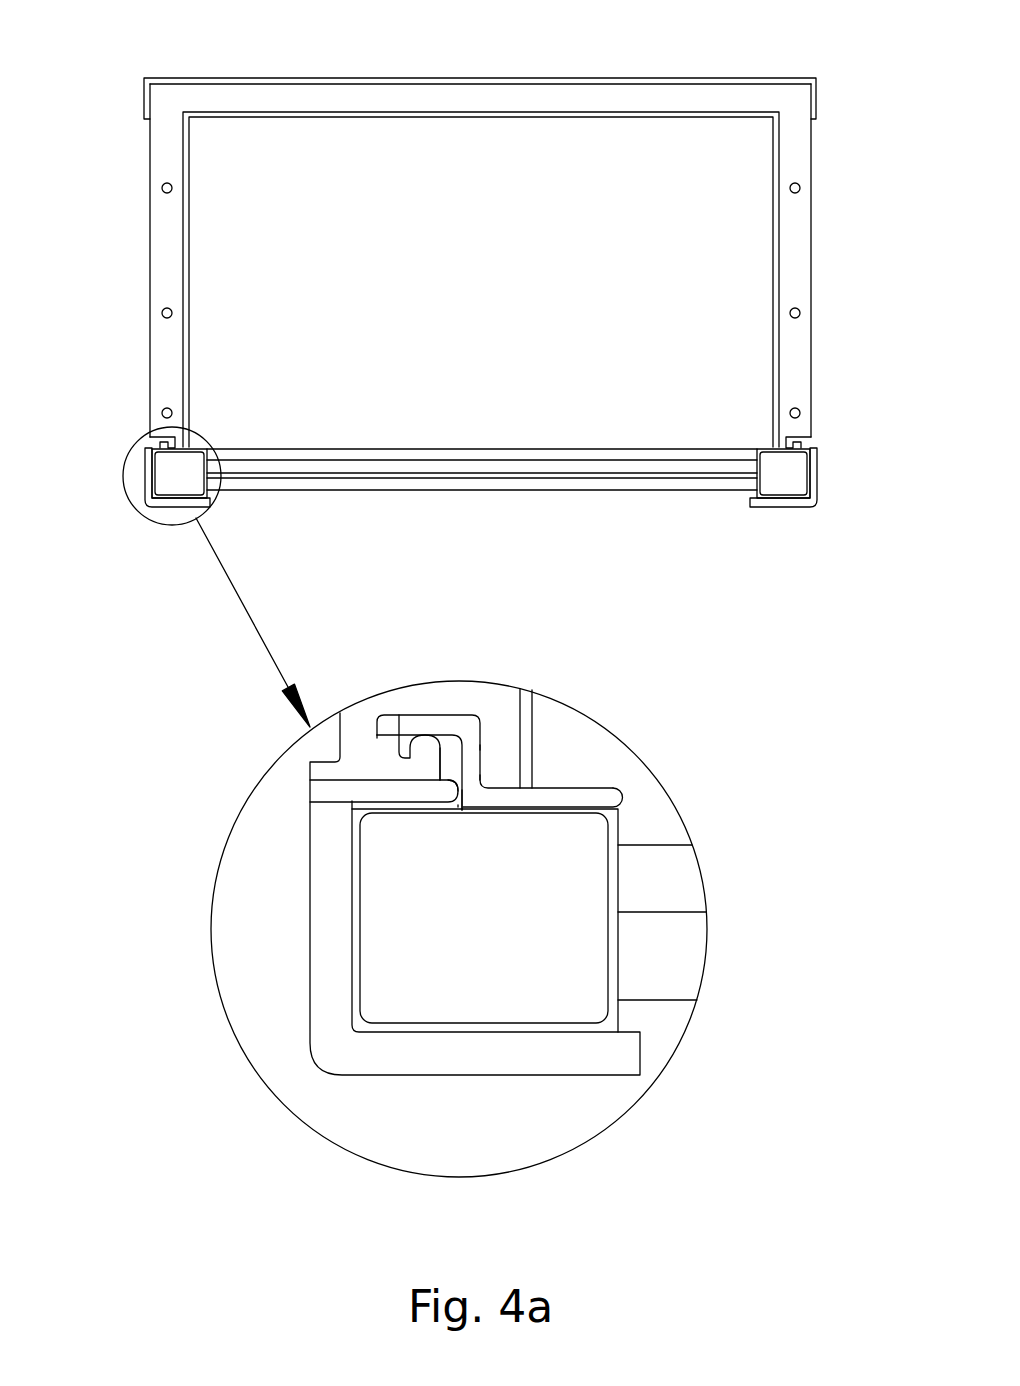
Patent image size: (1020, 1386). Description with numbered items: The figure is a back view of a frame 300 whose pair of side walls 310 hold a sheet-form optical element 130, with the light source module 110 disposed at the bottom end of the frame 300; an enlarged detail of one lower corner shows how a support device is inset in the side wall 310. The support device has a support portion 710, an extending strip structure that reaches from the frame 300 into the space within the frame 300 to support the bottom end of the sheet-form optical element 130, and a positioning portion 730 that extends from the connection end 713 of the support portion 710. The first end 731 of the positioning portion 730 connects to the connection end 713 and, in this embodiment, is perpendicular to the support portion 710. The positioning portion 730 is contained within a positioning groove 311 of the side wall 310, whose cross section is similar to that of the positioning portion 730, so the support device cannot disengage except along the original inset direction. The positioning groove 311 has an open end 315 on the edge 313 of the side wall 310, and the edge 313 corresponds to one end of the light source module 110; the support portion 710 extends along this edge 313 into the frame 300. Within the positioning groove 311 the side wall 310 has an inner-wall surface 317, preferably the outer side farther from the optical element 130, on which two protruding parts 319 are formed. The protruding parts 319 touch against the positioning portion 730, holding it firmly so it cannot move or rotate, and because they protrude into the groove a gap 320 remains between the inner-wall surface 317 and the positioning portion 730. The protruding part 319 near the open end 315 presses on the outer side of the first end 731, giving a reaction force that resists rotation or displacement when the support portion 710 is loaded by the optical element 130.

The frame 300 is at (362, 100).
The sheet-form optical element 130 is at (515, 160).
The side wall 310 is at (160, 245).
The light source module 110 is at (565, 483).
The positioning groove 311 is at (433, 738).
The edge 313 is at (353, 803).
The open end 315 is at (477, 800).
The inner-wall surface 317 is at (398, 720).
The protruding part 319 is at (452, 738).
The gap 320 is at (384, 747).
The support portion 710 is at (593, 800).
The connection end 713 is at (458, 805).
The positioning portion 730 is at (472, 747).
The first end 731 is at (472, 777).